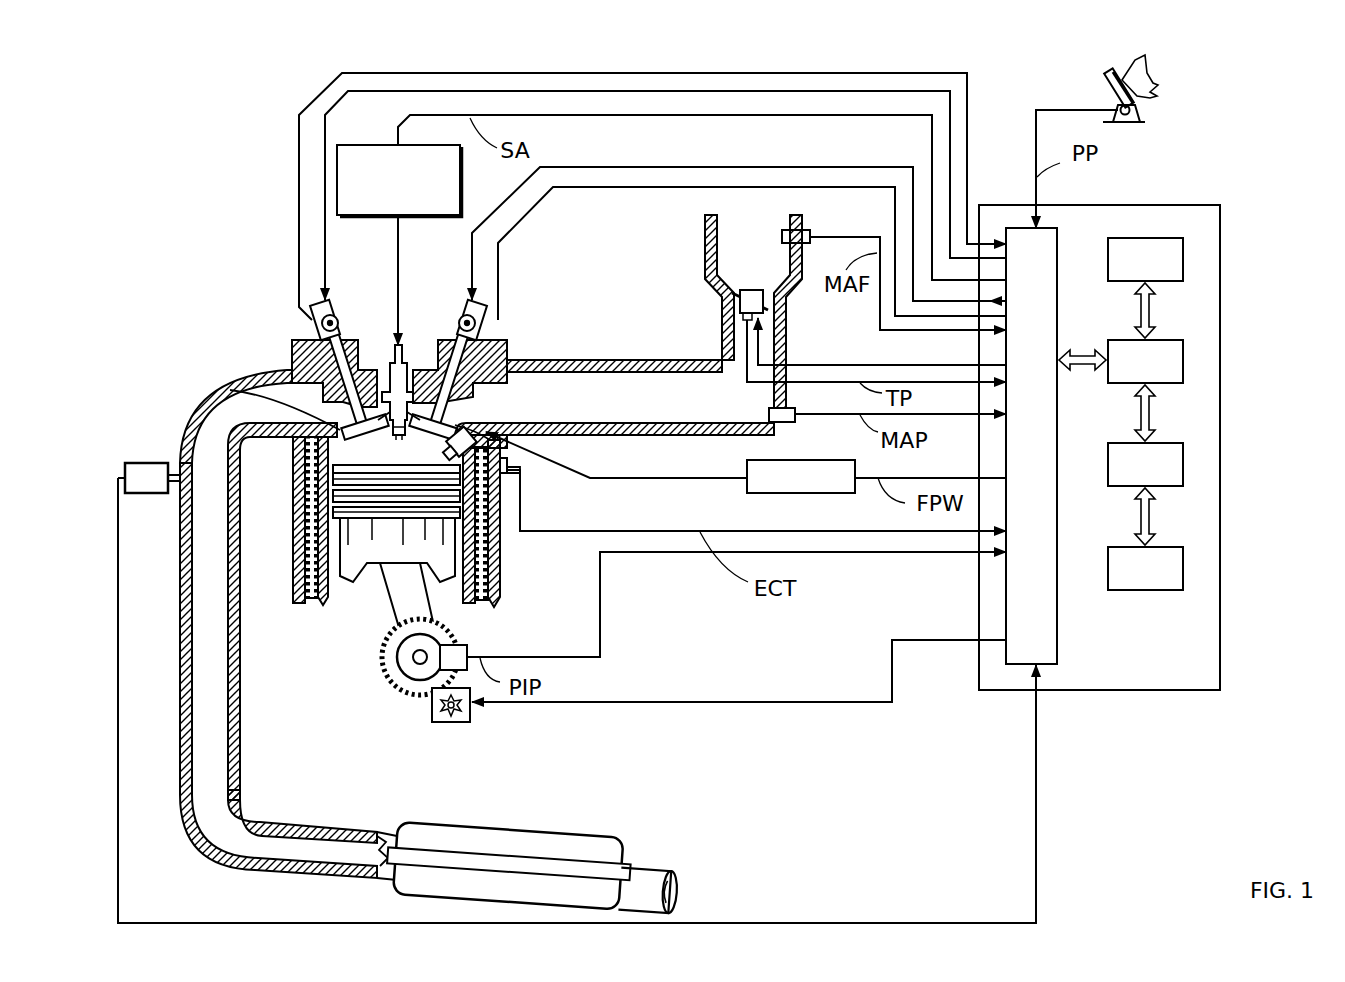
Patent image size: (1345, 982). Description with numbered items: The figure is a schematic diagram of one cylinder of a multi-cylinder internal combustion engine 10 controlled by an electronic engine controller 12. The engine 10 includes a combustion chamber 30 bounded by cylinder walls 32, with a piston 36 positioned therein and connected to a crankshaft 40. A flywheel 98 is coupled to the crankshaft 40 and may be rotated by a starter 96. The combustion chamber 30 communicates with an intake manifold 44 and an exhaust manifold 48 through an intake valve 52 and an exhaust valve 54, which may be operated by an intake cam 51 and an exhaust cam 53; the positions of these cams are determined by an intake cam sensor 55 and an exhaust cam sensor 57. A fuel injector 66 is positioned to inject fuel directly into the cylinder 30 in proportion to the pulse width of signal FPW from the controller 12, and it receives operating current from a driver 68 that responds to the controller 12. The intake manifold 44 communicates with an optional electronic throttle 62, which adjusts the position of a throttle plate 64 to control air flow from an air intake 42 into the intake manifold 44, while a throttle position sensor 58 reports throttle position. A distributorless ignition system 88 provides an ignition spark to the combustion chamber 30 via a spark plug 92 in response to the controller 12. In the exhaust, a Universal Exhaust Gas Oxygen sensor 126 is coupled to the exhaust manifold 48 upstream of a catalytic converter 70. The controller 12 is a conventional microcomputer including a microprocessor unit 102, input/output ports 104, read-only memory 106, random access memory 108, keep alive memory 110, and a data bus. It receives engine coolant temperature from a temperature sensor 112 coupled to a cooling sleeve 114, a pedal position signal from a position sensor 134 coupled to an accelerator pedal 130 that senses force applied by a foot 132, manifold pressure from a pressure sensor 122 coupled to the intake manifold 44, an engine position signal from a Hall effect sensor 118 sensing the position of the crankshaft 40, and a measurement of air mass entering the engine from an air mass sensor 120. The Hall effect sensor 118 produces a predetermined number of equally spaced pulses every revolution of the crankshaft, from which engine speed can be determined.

The internal combustion engine 10 is at (225, 292).
The electronic engine controller 12 is at (1210, 203).
The combustion chamber 30 is at (397, 447).
The cylinder walls 32 is at (340, 592).
The piston 36 is at (377, 550).
The crankshaft 40 is at (412, 660).
The air intake 42 is at (753, 311).
The intake manifold 44 is at (615, 404).
The exhaust manifold 48 is at (288, 625).
The intake cam 51 is at (460, 307).
The intake valve 52 is at (450, 410).
The exhaust cam 53 is at (340, 303).
The exhaust valve 54 is at (318, 378).
The intake cam sensor 55 is at (487, 330).
The exhaust cam sensor 57 is at (312, 328).
The throttle position sensor 58 is at (723, 318).
The electronic throttle 62 is at (768, 297).
The throttle plate 64 is at (730, 294).
The fuel injector 66 is at (487, 440).
The driver 68 is at (760, 493).
The catalytic converter 70 is at (410, 822).
The distributorless ignition system 88 is at (352, 145).
The spark plug 92 is at (400, 343).
The starter 96 is at (430, 717).
The flywheel 98 is at (415, 700).
The microprocessor unit 102 is at (1183, 362).
The input/output ports 104 is at (1058, 237).
The read-only memory 106 is at (1183, 260).
The random access memory 108 is at (1183, 465).
The keep alive memory 110 is at (1183, 570).
The temperature sensor 112 is at (510, 475).
The cooling sleeve 114 is at (480, 550).
The Hall effect sensor 118 is at (468, 634).
The air mass sensor 120 is at (798, 227).
The pressure sensor 122 is at (797, 423).
The Universal Exhaust Gas Oxygen sensor 126 is at (125, 467).
The accelerator pedal 130 is at (1103, 84).
The foot 132 is at (1158, 74).
The position sensor 134 is at (1145, 110).